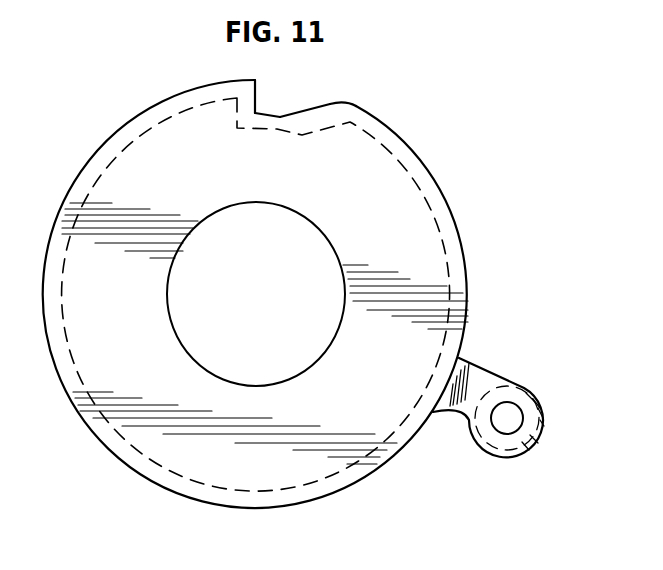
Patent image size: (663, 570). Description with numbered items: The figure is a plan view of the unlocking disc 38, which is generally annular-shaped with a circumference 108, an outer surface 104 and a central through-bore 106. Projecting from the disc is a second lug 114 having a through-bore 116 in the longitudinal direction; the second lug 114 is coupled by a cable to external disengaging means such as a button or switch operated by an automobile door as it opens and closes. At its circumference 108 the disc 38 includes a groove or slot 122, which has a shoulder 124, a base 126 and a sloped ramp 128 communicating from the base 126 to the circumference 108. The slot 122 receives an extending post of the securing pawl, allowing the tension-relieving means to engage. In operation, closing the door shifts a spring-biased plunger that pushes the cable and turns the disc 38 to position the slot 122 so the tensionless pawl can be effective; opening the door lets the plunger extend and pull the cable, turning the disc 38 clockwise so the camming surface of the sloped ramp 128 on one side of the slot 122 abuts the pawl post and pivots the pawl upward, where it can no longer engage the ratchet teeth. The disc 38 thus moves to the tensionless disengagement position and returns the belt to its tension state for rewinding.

The unlocking disc 38 is at (525, 153).
The outer surface 104 is at (135, 353).
The central through-bore 106 is at (283, 303).
The circumference 108 is at (122, 460).
The second lug 114 is at (480, 454).
The through-bore 116 is at (519, 427).
The groove or slot 122 is at (278, 92).
The shoulder 124 is at (258, 86).
The base 126 is at (279, 117).
The sloped ramp 128 is at (328, 104).